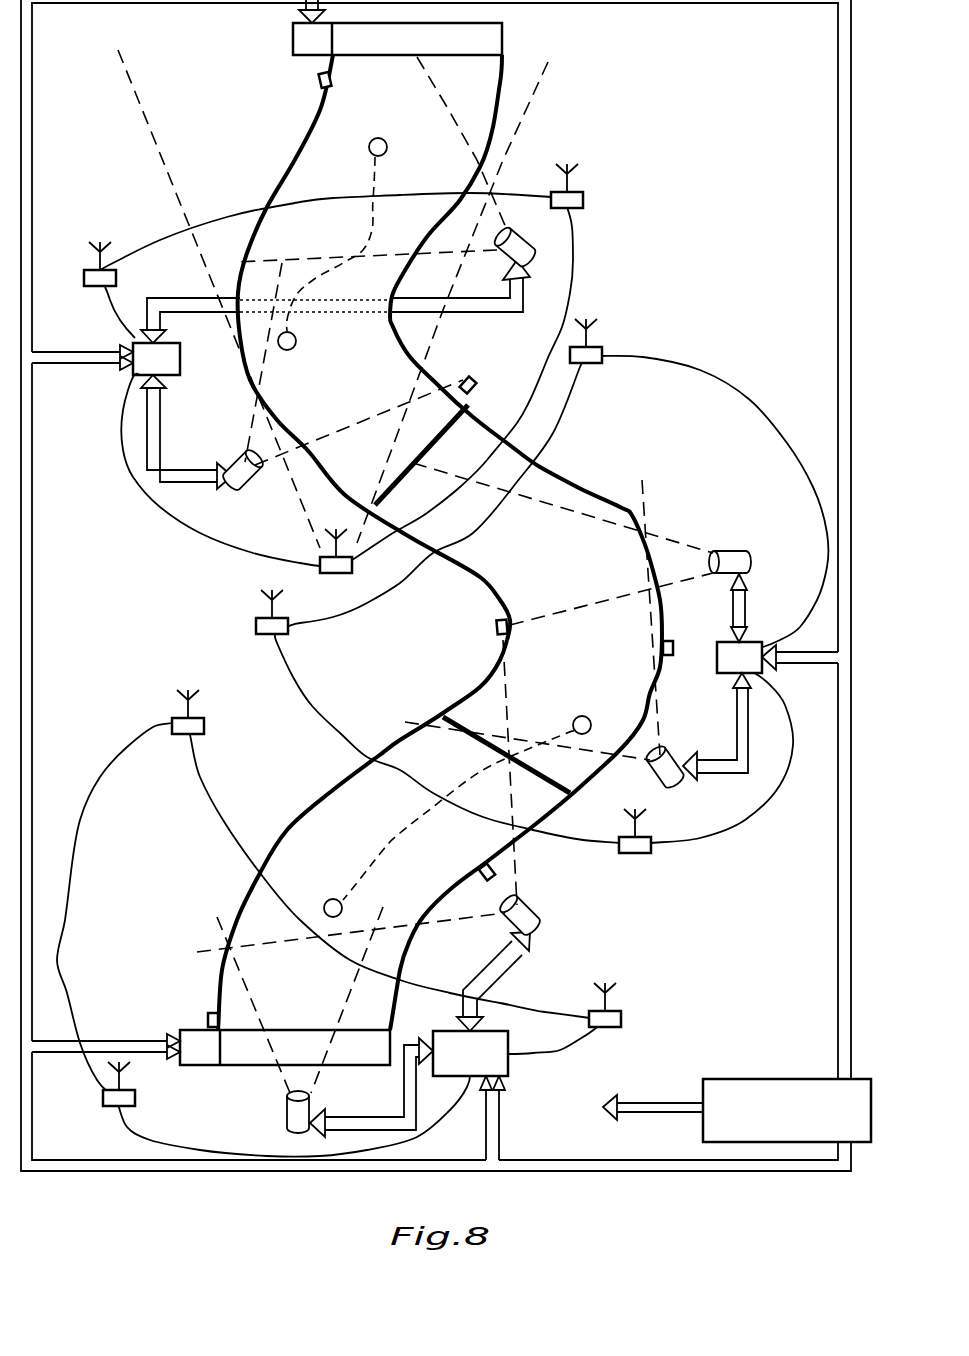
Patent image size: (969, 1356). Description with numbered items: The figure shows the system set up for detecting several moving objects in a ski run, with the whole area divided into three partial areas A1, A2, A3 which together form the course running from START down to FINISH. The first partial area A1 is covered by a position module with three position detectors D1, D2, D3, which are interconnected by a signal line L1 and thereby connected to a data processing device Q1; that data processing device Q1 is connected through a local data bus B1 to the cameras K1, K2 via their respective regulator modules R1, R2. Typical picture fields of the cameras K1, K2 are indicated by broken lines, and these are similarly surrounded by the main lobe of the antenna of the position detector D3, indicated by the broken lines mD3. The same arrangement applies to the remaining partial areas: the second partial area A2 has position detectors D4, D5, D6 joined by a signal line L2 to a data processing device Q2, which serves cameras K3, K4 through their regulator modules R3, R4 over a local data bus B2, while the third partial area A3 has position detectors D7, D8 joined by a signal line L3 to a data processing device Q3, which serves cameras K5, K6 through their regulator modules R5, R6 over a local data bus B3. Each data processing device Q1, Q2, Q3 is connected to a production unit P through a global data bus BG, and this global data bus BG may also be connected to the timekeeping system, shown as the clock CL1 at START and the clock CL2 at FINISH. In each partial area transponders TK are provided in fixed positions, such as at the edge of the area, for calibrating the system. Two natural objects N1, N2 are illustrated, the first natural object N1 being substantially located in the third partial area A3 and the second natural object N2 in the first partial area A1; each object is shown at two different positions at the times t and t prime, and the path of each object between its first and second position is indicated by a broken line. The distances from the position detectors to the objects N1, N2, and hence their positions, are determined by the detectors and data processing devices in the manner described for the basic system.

The start START is at (397, 39).
The finish FINISH is at (285, 1047).
The timekeeping system clock at start CL1 is at (315, 29).
The timekeeping system clock at finish CL2 is at (129, 1049).
The data processing device Q1 is at (106, 360).
The data processing device Q2 is at (777, 659).
The data processing device Q3 is at (470, 1095).
The production unit P is at (709, 1117).
The transponder TK is at (320, 80).
The first partial area A1 is at (290, 165).
The second partial area A2 is at (665, 620).
The third partial area A3 is at (248, 898).
The global data bus BG is at (838, 93).
The main lobe of the antenna of position detector D3 mD3 is at (143, 117).
The signal line L1 is at (226, 215).
The signal line L2 is at (757, 408).
The signal line L3 is at (110, 762).
The local data bus B1 is at (178, 296).
The local data bus B2 is at (748, 605).
The local data bus B3 is at (495, 965).
The position detector D1 is at (583, 198).
The position detector D2 is at (88, 275).
The position detector D3 is at (340, 573).
The position detector D4 is at (600, 350).
The position detector D5 is at (257, 627).
The position detector D6 is at (640, 853).
The position detector D7 is at (175, 722).
The position detector D8 is at (620, 1018).
The camera K1 is at (512, 233).
The camera K2 is at (233, 460).
The camera K3 is at (722, 550).
The camera K4 is at (674, 755).
The camera K5 is at (520, 905).
The camera K6 is at (287, 1105).
The regulator module R1 is at (528, 258).
The regulator module R2 is at (245, 482).
The regulator module R3 is at (745, 552).
The regulator module R4 is at (672, 778).
The regulator module R5 is at (530, 925).
The regulator module R6 is at (288, 1122).
The first natural object N1 is at (461, 798).
The second natural object N2 is at (361, 244).